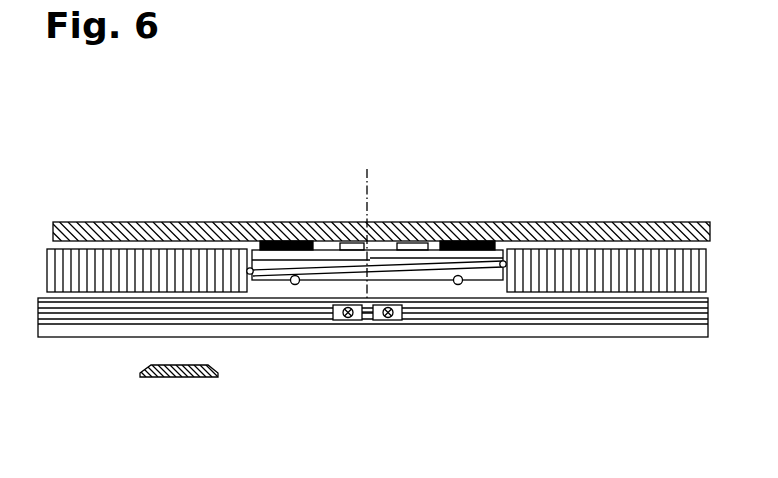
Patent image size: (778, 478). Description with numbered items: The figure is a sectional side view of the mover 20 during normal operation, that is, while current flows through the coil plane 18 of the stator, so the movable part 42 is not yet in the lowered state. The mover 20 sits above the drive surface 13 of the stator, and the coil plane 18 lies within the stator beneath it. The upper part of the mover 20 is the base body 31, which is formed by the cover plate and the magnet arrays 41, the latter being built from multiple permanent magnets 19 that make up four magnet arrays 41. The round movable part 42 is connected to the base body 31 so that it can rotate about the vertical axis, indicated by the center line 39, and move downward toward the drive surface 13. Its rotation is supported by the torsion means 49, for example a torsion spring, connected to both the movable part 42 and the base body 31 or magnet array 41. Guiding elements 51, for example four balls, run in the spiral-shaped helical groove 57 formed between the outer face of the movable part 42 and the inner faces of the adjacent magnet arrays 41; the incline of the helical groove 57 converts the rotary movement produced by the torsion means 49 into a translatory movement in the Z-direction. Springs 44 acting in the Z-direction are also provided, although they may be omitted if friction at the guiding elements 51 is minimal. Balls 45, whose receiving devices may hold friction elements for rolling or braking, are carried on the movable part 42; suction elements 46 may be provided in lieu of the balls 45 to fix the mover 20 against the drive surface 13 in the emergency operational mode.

The drive surface 13 is at (72, 323).
The coil plane 18 is at (354, 321).
The permanent magnets 19 is at (638, 282).
The mover 20 is at (655, 140).
The base body 31 is at (662, 223).
The center axis 39 is at (368, 176).
The magnet arrays 41 is at (137, 262).
The movable part 42 is at (323, 250).
The springs 44 is at (273, 242).
The balls 45 is at (296, 284).
The suction elements 46 is at (177, 378).
The torsion means 49 is at (400, 243).
The guiding elements 51 is at (248, 268).
The helical groove 57 is at (432, 258).